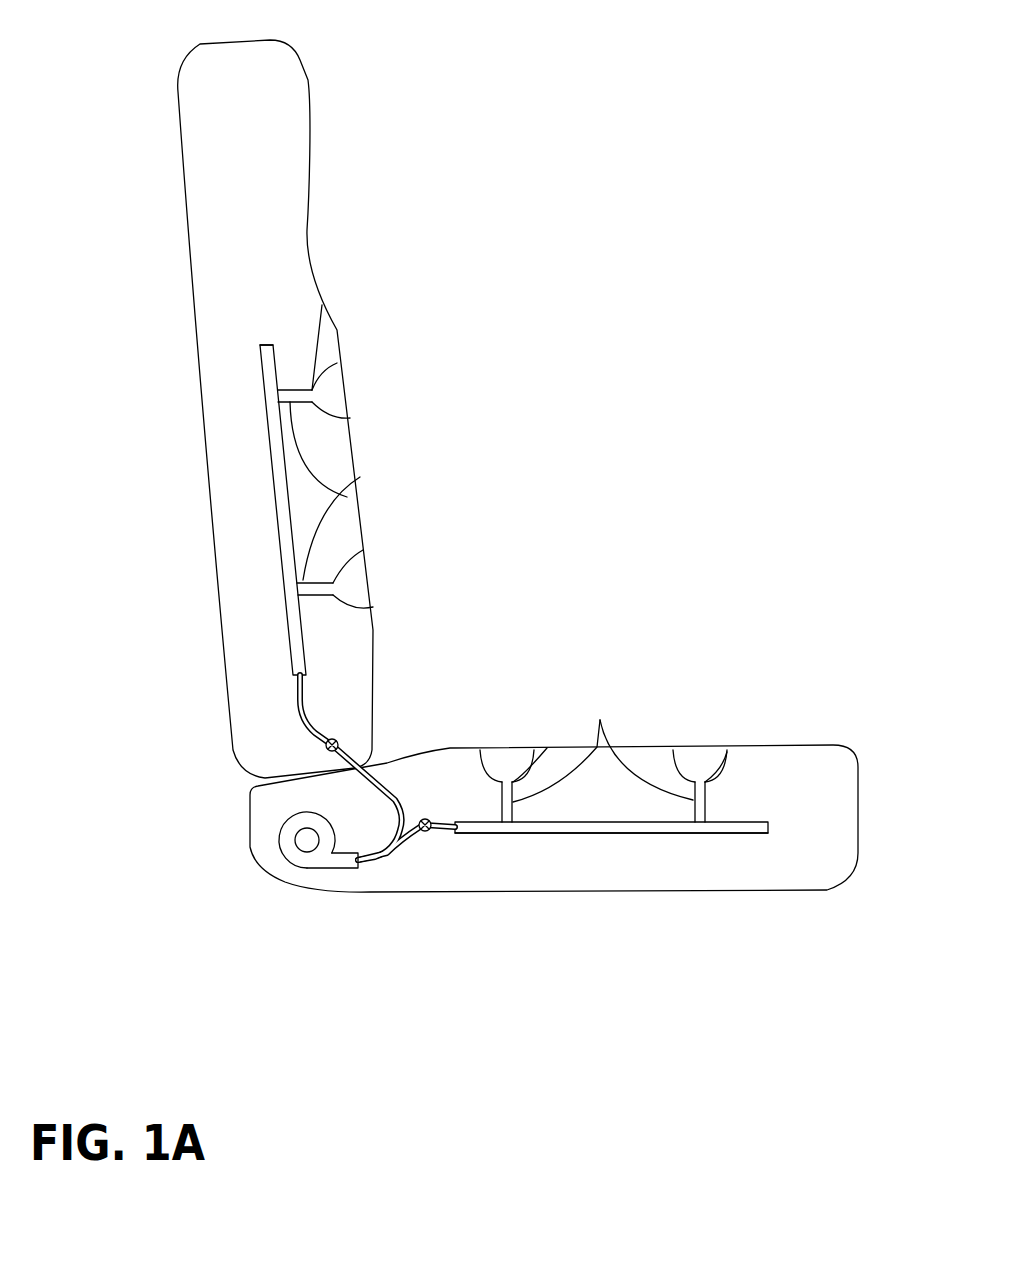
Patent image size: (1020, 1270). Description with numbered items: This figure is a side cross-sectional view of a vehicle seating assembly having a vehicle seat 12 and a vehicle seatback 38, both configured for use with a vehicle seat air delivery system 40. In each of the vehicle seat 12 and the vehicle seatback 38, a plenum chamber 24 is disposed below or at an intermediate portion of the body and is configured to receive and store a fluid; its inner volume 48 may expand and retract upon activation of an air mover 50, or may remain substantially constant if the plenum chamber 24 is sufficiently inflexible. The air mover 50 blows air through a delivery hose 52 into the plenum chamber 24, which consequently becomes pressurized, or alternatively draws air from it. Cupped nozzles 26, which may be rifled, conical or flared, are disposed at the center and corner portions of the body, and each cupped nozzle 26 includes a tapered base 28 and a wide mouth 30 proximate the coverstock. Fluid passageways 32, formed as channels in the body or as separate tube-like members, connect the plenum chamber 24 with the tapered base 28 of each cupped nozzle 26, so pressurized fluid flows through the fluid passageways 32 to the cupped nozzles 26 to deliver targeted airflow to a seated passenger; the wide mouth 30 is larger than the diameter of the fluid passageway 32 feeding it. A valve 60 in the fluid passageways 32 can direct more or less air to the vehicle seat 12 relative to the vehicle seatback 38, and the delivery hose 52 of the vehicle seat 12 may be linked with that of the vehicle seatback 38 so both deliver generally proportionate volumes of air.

The vehicle seat 12 is at (528, 466).
The plenum chamber 24 is at (267, 418).
The cupped nozzle 26 is at (333, 390).
The tapered base 28 is at (322, 305).
The wide mouth 30 is at (337, 363).
The fluid passageway 32 is at (360, 477).
The vehicle seatback 38 is at (482, 404).
The vehicle seat air delivery system 40 is at (176, 640).
The inner volume 48 is at (285, 515).
The air mover 50 is at (307, 870).
The delivery hose 52 is at (380, 858).
The valve 60 is at (325, 748).